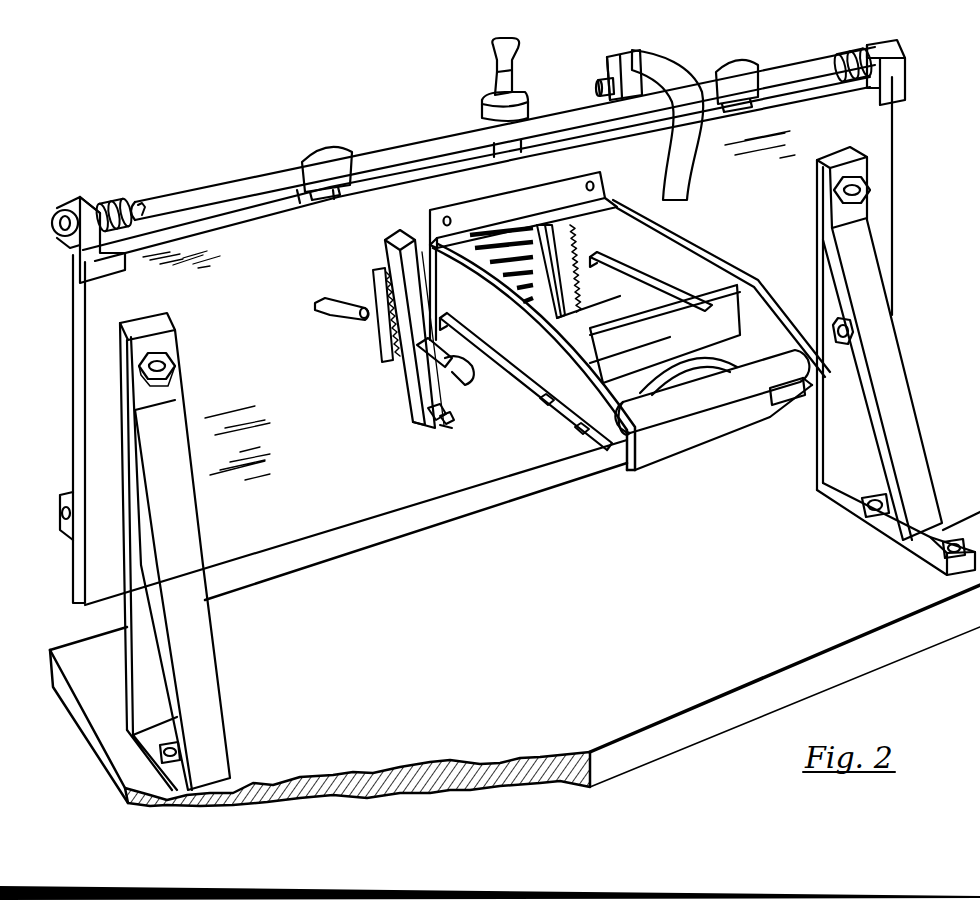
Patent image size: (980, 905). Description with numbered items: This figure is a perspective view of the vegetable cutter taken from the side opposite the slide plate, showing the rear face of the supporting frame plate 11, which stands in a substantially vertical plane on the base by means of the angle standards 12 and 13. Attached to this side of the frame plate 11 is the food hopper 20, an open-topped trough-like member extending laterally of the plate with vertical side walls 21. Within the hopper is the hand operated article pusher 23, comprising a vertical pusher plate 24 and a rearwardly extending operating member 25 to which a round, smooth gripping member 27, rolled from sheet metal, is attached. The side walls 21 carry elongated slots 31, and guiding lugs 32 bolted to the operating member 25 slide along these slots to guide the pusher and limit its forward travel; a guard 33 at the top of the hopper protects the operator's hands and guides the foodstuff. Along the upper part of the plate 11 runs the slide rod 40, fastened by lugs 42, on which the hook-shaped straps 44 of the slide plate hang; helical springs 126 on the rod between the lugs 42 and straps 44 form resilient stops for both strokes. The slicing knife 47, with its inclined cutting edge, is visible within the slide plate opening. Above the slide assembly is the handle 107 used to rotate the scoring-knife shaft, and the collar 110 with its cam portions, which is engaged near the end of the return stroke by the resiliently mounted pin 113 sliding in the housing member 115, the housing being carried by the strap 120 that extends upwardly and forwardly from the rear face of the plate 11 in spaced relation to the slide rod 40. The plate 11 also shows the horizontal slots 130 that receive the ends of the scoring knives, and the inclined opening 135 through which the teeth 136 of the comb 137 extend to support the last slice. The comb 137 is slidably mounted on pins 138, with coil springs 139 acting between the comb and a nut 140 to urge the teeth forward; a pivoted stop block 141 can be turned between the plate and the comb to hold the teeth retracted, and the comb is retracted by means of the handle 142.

The supporting frame plate 11 is at (88, 378).
The angle standard 12 is at (145, 658).
The angle standard 13 is at (205, 690).
The food hopper 20 is at (701, 262).
The side wall 21 is at (667, 247).
The article pusher 23 is at (730, 312).
The pusher plate 24 is at (745, 325).
The operating member 25 is at (762, 355).
The gripping member 27 is at (712, 410).
The elongated slot 31 is at (494, 352).
The guiding lug 32 is at (580, 437).
The guard 33 is at (533, 215).
The slide rod 40 is at (190, 195).
The lug 42 is at (57, 240).
The hook-shaped strap 44 is at (318, 160).
The slicing knife 47 is at (548, 262).
The handle 107 is at (498, 50).
The collar 110 is at (497, 103).
The pin 113 is at (597, 88).
The housing member 115 is at (607, 75).
The strap 120 is at (668, 78).
The helical spring 126 is at (100, 203).
The slot 130 is at (600, 286).
The opening 135 is at (385, 338).
The teeth 136 is at (393, 368).
The comb 137 is at (413, 395).
The pin 138 is at (450, 424).
The coil spring 139 is at (420, 428).
The nut 140 is at (443, 420).
The stop block 141 is at (334, 308).
The handle 142 is at (465, 378).